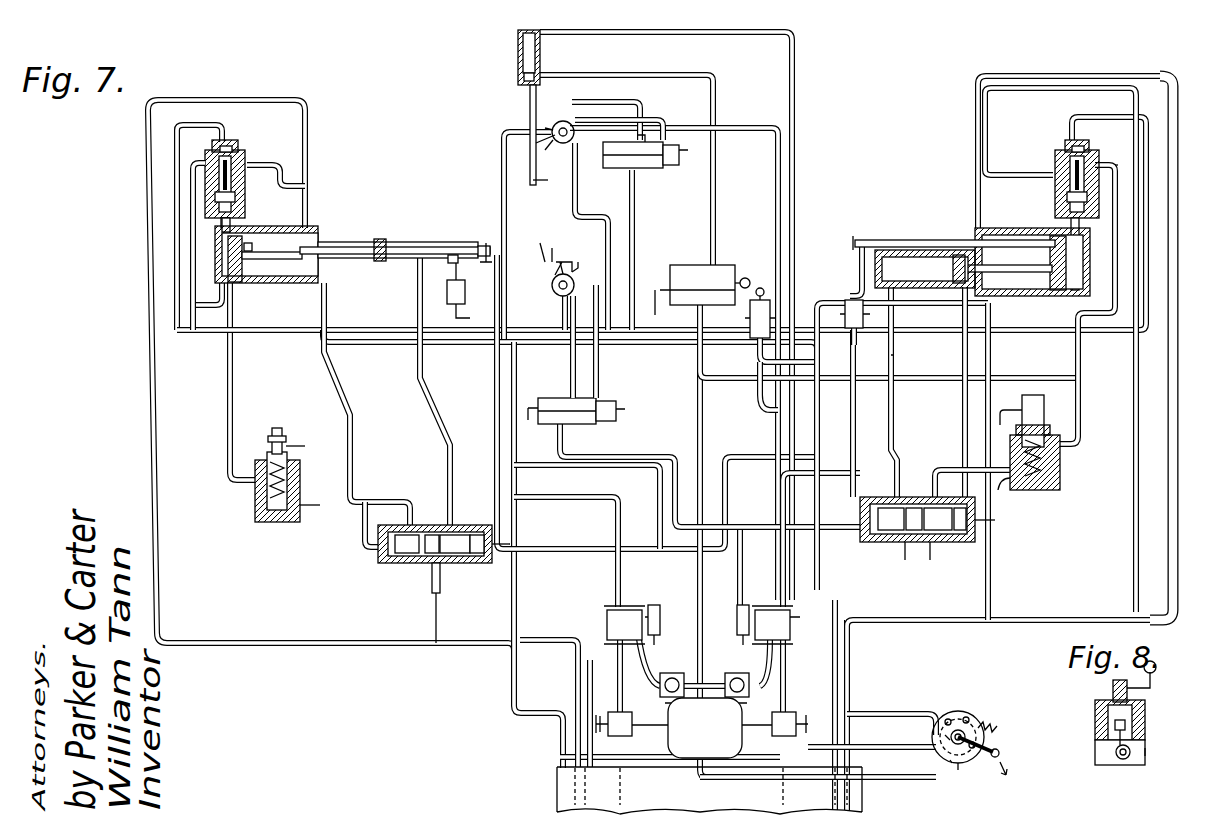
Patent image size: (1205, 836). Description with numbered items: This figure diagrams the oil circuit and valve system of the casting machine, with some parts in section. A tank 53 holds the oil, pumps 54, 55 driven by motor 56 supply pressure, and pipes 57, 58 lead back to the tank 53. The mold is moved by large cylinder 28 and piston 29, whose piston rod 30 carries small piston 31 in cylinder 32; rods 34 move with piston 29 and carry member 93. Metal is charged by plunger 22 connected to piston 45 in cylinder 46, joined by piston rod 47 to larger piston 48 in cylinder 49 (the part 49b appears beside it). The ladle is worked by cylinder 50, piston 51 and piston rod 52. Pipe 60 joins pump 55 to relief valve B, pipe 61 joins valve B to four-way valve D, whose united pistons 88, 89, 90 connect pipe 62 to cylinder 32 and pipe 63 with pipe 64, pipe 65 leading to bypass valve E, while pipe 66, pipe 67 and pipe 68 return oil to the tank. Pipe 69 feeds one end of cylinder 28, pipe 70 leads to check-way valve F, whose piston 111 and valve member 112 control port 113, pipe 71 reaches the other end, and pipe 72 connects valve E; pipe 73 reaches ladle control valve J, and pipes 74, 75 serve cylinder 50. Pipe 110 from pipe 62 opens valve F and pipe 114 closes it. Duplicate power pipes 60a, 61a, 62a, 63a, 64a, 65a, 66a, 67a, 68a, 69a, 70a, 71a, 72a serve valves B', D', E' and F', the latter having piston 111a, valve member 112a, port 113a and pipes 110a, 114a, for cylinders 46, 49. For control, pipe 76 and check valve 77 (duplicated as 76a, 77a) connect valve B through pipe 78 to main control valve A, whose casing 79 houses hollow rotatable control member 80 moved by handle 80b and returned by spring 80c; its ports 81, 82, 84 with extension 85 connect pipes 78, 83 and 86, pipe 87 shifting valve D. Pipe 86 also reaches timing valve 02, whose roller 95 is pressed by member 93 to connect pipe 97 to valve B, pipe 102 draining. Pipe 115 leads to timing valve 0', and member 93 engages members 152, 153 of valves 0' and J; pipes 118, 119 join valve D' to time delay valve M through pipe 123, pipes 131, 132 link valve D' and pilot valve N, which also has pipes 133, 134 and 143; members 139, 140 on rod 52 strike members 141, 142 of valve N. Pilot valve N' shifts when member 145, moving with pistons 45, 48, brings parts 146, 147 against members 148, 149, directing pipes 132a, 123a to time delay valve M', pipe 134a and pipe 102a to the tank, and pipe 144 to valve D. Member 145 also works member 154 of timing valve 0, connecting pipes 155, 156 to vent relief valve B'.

In FIG. 7, the plunger 22 is at (380, 247).
In FIG. 7, the large cylinder 28 is at (1000, 232).
In FIG. 7, the piston 29 is at (1056, 292).
In FIG. 7, the piston rod 30 is at (1020, 272).
In FIG. 7, the small piston 31 is at (957, 255).
In FIG. 7, the smaller cylinder 32 is at (904, 258).
In FIG. 7, the rods 34 is at (930, 240).
In FIG. 7, the piston 45 is at (378, 262).
In FIG. 7, the cylinder 46 is at (350, 243).
In FIG. 7, the piston rod 47 is at (274, 262).
In FIG. 7, the larger piston 48 is at (240, 283).
In FIG. 7, the cylinder 49 is at (270, 238).
In FIG. 7, the stop 49b is at (244, 250).
In FIG. 7, the cylinder 50 is at (517, 48).
In FIG. 7, the piston 51 is at (523, 76).
In FIG. 7, the piston rod 52 is at (529, 95).
In FIG. 7, the tank 53 is at (565, 792).
In FIG. 7, the pump 54 is at (625, 738).
In FIG. 7, the pump 55 is at (775, 738).
In FIG. 7, the motor 56 is at (700, 760).
In FIG. 7, the pipe 57 is at (852, 748).
In FIG. 7, the pipe 58 is at (560, 758).
In FIG. 7, the pipe 60 is at (786, 685).
In FIG. 7, the duplicate power pipe 60a is at (618, 657).
In FIG. 7, the pipe 61 is at (786, 545).
In FIG. 7, the pipe 61a is at (560, 497).
In FIG. 7, the pipe 62 is at (893, 355).
In FIG. 7, the pipe 62a is at (446, 440).
In FIG. 7, the pipe 63 is at (963, 395).
In FIG. 7, the pipe 63a is at (282, 427).
In FIG. 7, the pipe 64 is at (945, 468).
In FIG. 7, the pipe 64a is at (402, 500).
In FIG. 7, the pipe 65 is at (1005, 480).
In FIG. 7, the pipe 65a is at (322, 515).
In FIG. 7, the pipe 66 is at (912, 594).
In FIG. 7, the pipe 66a is at (436, 593).
In FIG. 7, the pipe 67 is at (878, 615).
In FIG. 7, the pipe 67a is at (470, 643).
In FIG. 7, the pipe 68 is at (838, 645).
In FIG. 7, the pipe 68a is at (576, 683).
In FIG. 7, the pipe 69 is at (1045, 76).
In FIG. 7, the pipe 69a is at (303, 100).
In FIG. 7, the pipe 70 is at (1008, 173).
In FIG. 7, the pipe 70a is at (310, 183).
In FIG. 7, the pipe 71 is at (1080, 228).
In FIG. 7, the pipe 71a is at (222, 228).
In FIG. 7, the pipe 72 is at (1081, 368).
In FIG. 7, the pipe 72a is at (228, 400).
In FIG. 7, the pipe 73 is at (702, 370).
In FIG. 7, the pipe 74 is at (716, 190).
In FIG. 7, the pipe 75 is at (793, 65).
In FIG. 7, the pipe 76 is at (772, 672).
In FIG. 7, the duplicate control pipe 76a is at (638, 670).
In FIG. 7, the check valve 77 is at (728, 672).
In FIG. 7, the duplicate check valve 77a is at (690, 662).
In FIG. 7, the pipe 78 is at (880, 780).
In FIG. 8, the pipe 78 is at (1125, 760).
In FIG. 7, the casing 79 is at (960, 765).
In FIG. 8, the casing 79 is at (1095, 728).
In FIG. 7, the hollow rotatable control member 80 is at (946, 738).
In FIG. 8, the hollow rotatable control member 80 is at (1110, 715).
In FIG. 7, the control handle 80b is at (995, 762).
In FIG. 8, the control handle 80b is at (1152, 690).
In FIG. 7, the spring 80c is at (998, 724).
In FIG. 7, the port 81 is at (948, 758).
In FIG. 7, the port 82 is at (948, 718).
In FIG. 8, the port 82 is at (1118, 726).
In FIG. 7, the pipe 83 is at (878, 713).
In FIG. 7, the port 84 is at (980, 718).
In FIG. 8, the port 84 is at (1120, 748).
In FIG. 7, the circumferentially extending portion 85 is at (966, 716).
In FIG. 7, the pipe 86 is at (960, 320).
In FIG. 7, the pipe 87 is at (968, 530).
In FIG. 7, the piston 88 is at (950, 542).
In FIG. 7, the piston 89 is at (890, 542).
In FIG. 7, the piston 90 is at (862, 512).
In FIG. 7, the member 93 is at (850, 275).
In FIG. 7, the roller 95 is at (846, 300).
In FIG. 7, the pipe 97 is at (770, 360).
In FIG. 7, the pipe 102 is at (854, 460).
In FIG. 7, the pipe 102a is at (514, 705).
In FIG. 7, the pipe 110 is at (1092, 117).
In FIG. 7, the duplicate pipe 110a is at (175, 267).
In FIG. 7, the piston 111 is at (1068, 150).
In FIG. 7, the piston 111a is at (233, 150).
In FIG. 7, the valve member 112 is at (1067, 198).
In FIG. 7, the valve member 112a is at (214, 200).
In FIG. 7, the port 113 is at (1072, 175).
In FIG. 7, the duplicate port 113a is at (220, 175).
In FIG. 7, the pipe 114 is at (1118, 165).
In FIG. 7, the pipe 114a is at (191, 303).
In FIG. 7, the pipe 115 is at (772, 412).
In FIG. 7, the pipe 118 is at (531, 553).
In FIG. 7, the pipe 119 is at (781, 168).
In FIG. 7, the pipe 123 is at (614, 117).
In FIG. 7, the pipe 123a is at (599, 384).
In FIG. 7, the pipe 131 is at (634, 215).
In FIG. 7, the pipe 132 is at (640, 100).
In FIG. 7, the pipe 132a is at (571, 385).
In FIG. 7, the pipe 133 is at (578, 200).
In FIG. 7, the pipe 134 is at (502, 165).
In FIG. 7, the pipe 134a is at (524, 245).
In FIG. 7, the member 139 is at (540, 140).
In FIG. 7, the actuating member 140 is at (530, 180).
In FIG. 7, the lever 141 is at (548, 128).
In FIG. 7, the member 142 is at (548, 142).
In FIG. 7, the pipe 143 is at (563, 325).
In FIG. 7, the pipe 144 is at (640, 456).
In FIG. 7, the member 145 is at (486, 242).
In FIG. 7, the actuating part 146 is at (470, 246).
In FIG. 7, the actuating part 147 is at (562, 260).
In FIG. 7, the member 148 is at (552, 245).
In FIG. 7, the member 149 is at (576, 262).
In FIG. 7, the member 152 is at (762, 288).
In FIG. 7, the member 153 is at (746, 278).
In FIG. 7, the member 154 is at (448, 262).
In FIG. 7, the pipe 155 is at (436, 332).
In FIG. 7, the pipe 156 is at (496, 380).
In FIG. 7, the timing valve 0 is at (420, 292).
In FIG. 7, the timing valve 0' is at (751, 332).
In FIG. 7, the timing valve 02 is at (846, 305).
In FIG. 7, the main control valve A is at (935, 740).
In FIG. 8, the main control valve A is at (1146, 750).
In FIG. 7, the relief valve B is at (780, 613).
In FIG. 7, the relief valve B' is at (607, 610).
In FIG. 7, the four-way valve D is at (942, 525).
In FIG. 7, the four-way valve D' is at (436, 569).
In FIG. 7, the bypass valve E is at (1060, 442).
In FIG. 7, the bypass valve E' is at (239, 490).
In FIG. 7, the check-way valve F is at (1085, 171).
In FIG. 7, the check-way valve F' is at (170, 176).
In FIG. 7, the ladle control valve J is at (685, 268).
In FIG. 7, the time delay valve M is at (645, 162).
In FIG. 7, the time delay valve M' is at (579, 423).
In FIG. 7, the pilot valve N is at (575, 98).
In FIG. 7, the pilot valve N' is at (544, 289).